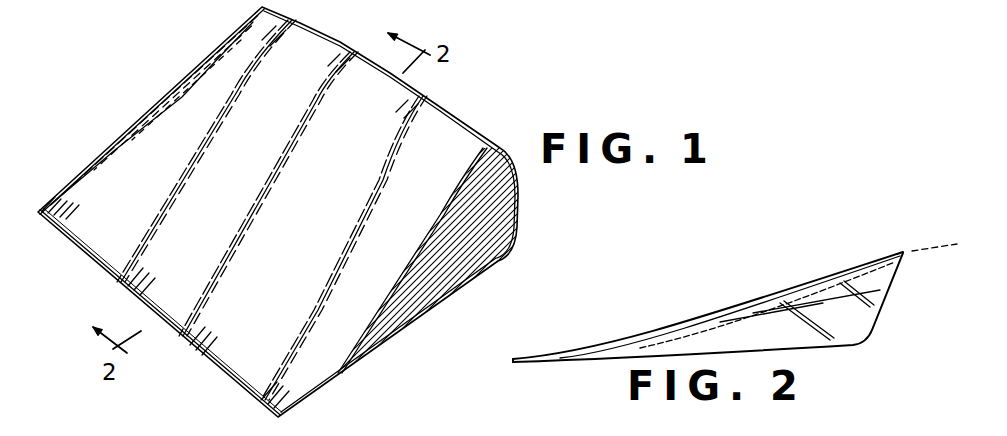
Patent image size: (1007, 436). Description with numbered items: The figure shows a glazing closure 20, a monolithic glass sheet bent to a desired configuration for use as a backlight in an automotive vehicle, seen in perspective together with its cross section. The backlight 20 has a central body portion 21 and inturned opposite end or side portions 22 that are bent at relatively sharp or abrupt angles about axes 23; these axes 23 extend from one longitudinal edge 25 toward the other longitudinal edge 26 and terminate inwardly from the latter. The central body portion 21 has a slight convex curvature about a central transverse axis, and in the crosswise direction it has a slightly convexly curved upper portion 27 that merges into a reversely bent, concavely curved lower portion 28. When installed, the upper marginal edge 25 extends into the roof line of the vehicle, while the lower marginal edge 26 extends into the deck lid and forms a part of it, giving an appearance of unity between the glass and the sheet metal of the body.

In FIG. 1, the glazing closure 20 is at (492, 85).
In FIG. 2, the glazing closure 20 is at (735, 271).
In FIG. 1, the central body portion 21 is at (331, 225).
In FIG. 2, the central body portion 21 is at (755, 296).
In FIG. 1, the inturned opposite end portions 22 is at (217, 68).
In FIG. 2, the inturned opposite end portions 22 is at (830, 330).
In FIG. 1, the axes 23 is at (218, 35).
In FIG. 1, the upper marginal edge 25 is at (466, 124).
In FIG. 2, the upper marginal edge 25 is at (907, 252).
In FIG. 1, the lower marginal edge 26 is at (232, 380).
In FIG. 2, the lower marginal edge 26 is at (513, 362).
In FIG. 1, the upper portion 27 is at (305, 93).
In FIG. 2, the upper portion 27 is at (843, 263).
In FIG. 1, the lower portion 28 is at (207, 313).
In FIG. 2, the lower portion 28 is at (598, 346).